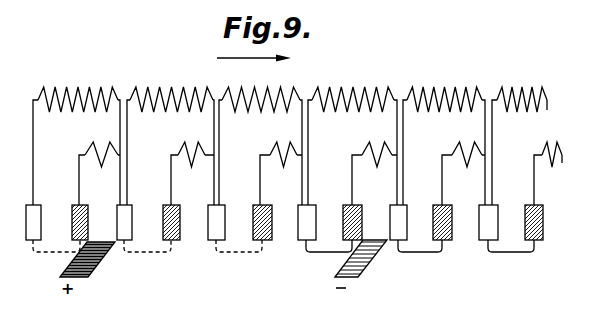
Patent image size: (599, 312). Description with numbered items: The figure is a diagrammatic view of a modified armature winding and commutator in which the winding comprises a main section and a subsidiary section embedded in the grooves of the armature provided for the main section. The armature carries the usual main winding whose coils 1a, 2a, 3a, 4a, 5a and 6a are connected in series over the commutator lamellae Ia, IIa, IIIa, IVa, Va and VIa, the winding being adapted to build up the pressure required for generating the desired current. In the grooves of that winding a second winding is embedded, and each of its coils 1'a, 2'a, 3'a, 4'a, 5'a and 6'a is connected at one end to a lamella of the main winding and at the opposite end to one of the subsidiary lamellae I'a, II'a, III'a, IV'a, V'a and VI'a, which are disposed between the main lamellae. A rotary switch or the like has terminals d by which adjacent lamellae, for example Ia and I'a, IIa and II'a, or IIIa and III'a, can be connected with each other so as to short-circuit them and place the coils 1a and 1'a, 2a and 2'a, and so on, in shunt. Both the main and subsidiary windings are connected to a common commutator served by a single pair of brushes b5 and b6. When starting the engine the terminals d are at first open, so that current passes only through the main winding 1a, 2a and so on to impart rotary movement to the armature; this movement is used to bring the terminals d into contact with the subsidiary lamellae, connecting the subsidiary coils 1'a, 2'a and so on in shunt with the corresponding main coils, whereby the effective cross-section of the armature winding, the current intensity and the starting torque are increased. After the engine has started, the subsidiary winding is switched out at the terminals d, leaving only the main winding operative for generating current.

The main winding coil 1a is at (78, 89).
The main winding coil 2a is at (171, 89).
The main winding coil 3a is at (261, 89).
The main winding coil 4a is at (353, 88).
The main winding coil 5a is at (444, 88).
The main winding coil 6a is at (522, 88).
The subsidiary winding coil 1'a is at (94, 146).
The subsidiary winding coil 2'a is at (184, 146).
The subsidiary winding coil 3'a is at (276, 146).
The subsidiary winding coil 4'a is at (369, 146).
The subsidiary winding coil 5'a is at (458, 145).
The subsidiary winding coil 6'a is at (543, 145).
The commutator lamella Ia is at (45, 234).
The commutator lamella IIa is at (136, 234).
The commutator lamella IIIa is at (229, 234).
The commutator lamella IVa is at (320, 234).
The commutator lamella Va is at (411, 234).
The commutator lamella VIa is at (502, 234).
The subsidiary lamella I'a is at (90, 222).
The subsidiary lamella II'a is at (184, 222).
The subsidiary lamella III'a is at (277, 222).
The subsidiary lamella IV'a is at (368, 222).
The subsidiary lamella V'a is at (455, 222).
The subsidiary lamella VI'a is at (552, 222).
The terminals d is at (49, 255).
The brush b5 is at (92, 277).
The brush b6 is at (366, 277).